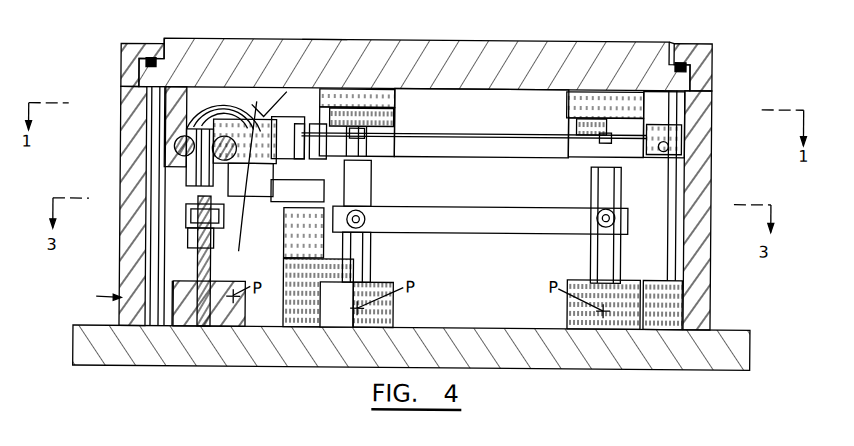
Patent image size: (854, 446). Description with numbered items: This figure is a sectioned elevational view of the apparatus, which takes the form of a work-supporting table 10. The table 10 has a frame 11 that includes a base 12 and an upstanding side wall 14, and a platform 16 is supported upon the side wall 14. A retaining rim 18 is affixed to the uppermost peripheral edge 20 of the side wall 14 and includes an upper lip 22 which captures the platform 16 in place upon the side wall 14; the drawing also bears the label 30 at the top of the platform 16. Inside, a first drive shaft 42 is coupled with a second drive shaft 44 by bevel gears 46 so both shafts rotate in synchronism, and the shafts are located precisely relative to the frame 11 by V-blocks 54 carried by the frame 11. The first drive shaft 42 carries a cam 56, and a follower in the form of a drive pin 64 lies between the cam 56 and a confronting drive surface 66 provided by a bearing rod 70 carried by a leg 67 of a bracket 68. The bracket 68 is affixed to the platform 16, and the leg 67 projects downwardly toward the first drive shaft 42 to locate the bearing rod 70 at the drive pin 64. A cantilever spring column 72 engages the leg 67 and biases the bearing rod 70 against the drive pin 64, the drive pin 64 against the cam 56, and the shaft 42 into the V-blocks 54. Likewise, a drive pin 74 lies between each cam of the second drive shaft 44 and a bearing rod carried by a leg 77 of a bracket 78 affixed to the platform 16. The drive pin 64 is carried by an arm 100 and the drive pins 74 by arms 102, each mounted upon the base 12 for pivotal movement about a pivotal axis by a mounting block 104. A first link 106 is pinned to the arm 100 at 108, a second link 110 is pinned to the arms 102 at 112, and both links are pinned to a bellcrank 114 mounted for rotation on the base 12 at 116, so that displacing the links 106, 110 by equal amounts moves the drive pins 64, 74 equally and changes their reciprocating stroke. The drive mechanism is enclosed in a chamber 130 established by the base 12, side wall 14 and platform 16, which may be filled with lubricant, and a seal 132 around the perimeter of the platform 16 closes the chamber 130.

The work-supporting table 10 is at (409, 193).
The frame 11 is at (98, 294).
The base 12 is at (445, 337).
The side wall 14 is at (702, 118).
The platform 16 is at (455, 50).
The retaining rim 18 is at (127, 68).
The uppermost peripheral edge 20 is at (128, 85).
The upper lip 22 is at (139, 43).
The top surface 30 is at (322, 38).
The first drive shaft 42 is at (298, 138).
The second drive shaft 44 is at (472, 137).
The bevel gears 46 is at (266, 110).
The V-blocks 54 is at (268, 92).
The cam 56 is at (236, 178).
The drive pin 64 is at (228, 93).
The drive surface 66 is at (192, 104).
The leg 67 is at (167, 100).
The bracket 68 is at (224, 119).
The bearing rod 70 is at (163, 137).
The cantilever spring column 72 is at (150, 163).
The drive pin 74 is at (358, 131).
The leg 77 is at (395, 122).
The bracket 78 is at (395, 96).
The arm 100 is at (208, 260).
The arms 102 is at (367, 256).
The mounting block 104 is at (238, 312).
The first link 106 is at (197, 233).
The pin connection 108 is at (193, 213).
The second link 110 is at (445, 210).
The pin connection 112 is at (372, 226).
The bellcrank 114 is at (277, 215).
The rotation mount 116 is at (357, 190).
The chamber 130 is at (477, 271).
The seal 132 is at (152, 63).